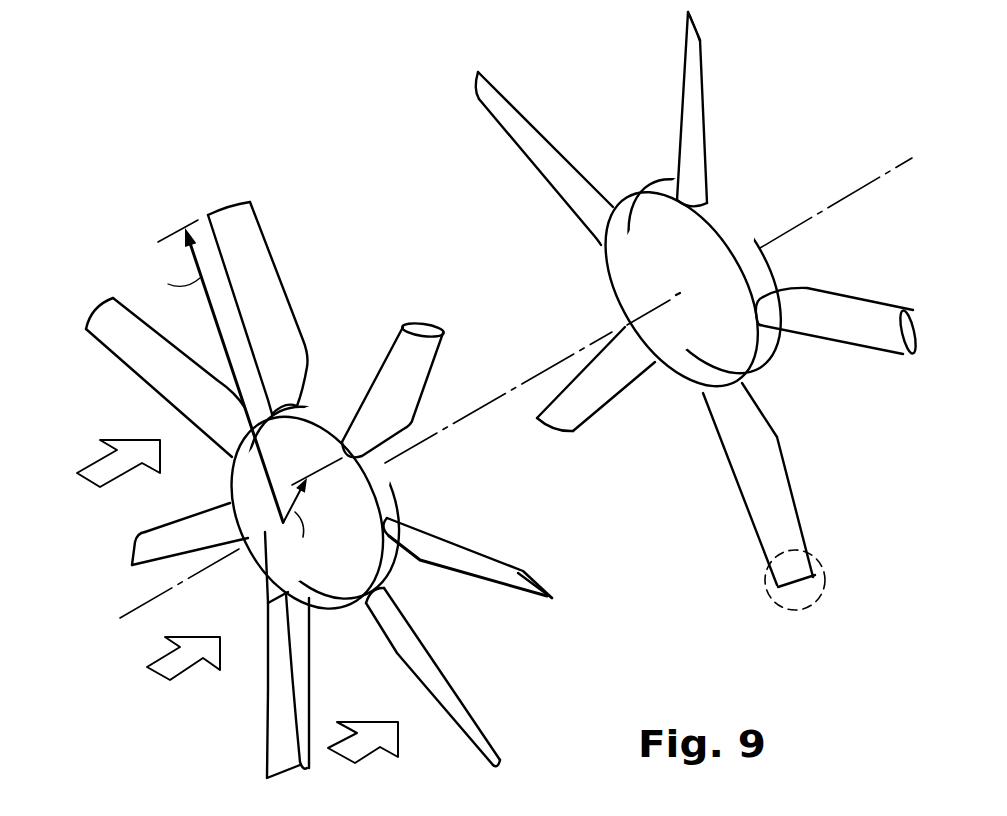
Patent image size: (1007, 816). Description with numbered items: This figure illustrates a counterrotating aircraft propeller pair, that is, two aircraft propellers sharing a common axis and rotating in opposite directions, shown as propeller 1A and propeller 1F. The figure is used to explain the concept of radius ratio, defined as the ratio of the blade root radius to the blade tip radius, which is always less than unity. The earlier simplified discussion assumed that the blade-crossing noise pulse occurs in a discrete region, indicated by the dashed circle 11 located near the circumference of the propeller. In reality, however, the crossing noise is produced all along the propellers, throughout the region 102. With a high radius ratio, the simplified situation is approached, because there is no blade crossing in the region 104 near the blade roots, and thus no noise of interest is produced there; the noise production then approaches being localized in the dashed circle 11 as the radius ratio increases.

The propeller 1A is at (673, 450).
The propeller 1F is at (332, 490).
The dashed circle 11 is at (818, 598).
The region 102 is at (266, 692).
The region 104 is at (264, 568).